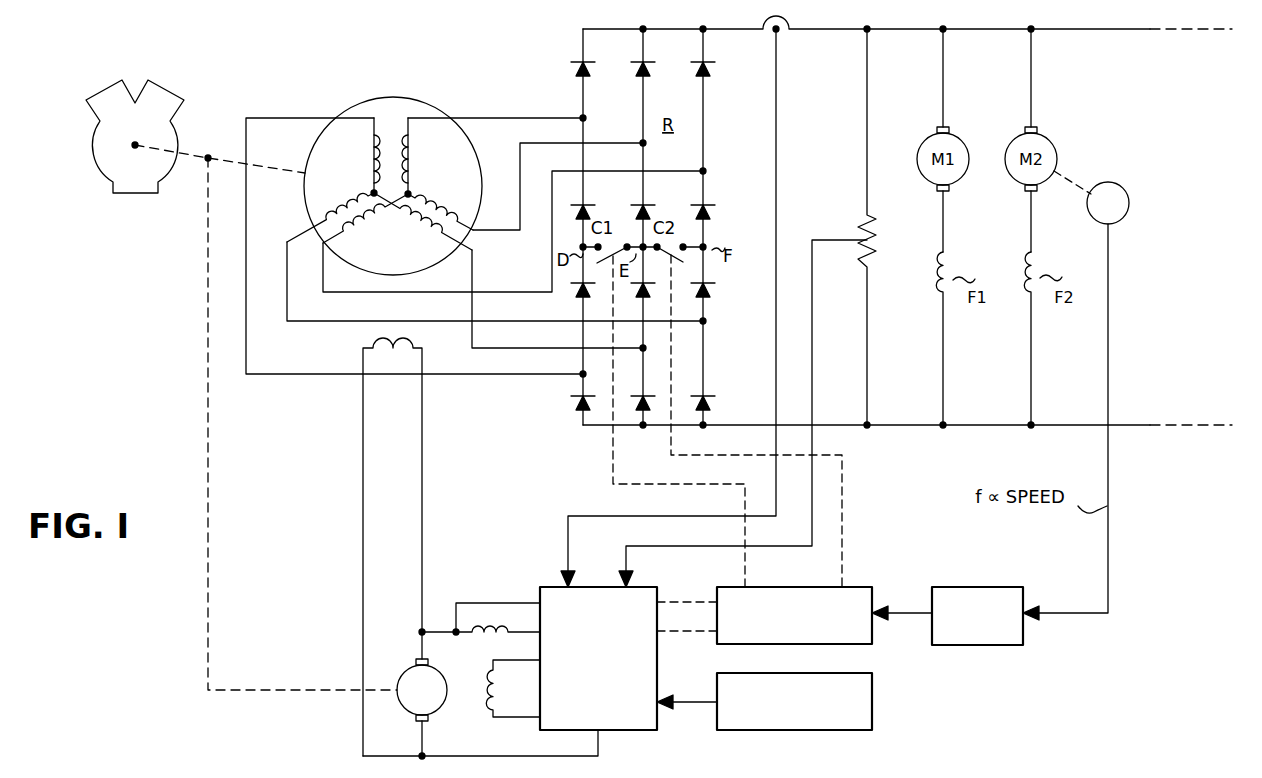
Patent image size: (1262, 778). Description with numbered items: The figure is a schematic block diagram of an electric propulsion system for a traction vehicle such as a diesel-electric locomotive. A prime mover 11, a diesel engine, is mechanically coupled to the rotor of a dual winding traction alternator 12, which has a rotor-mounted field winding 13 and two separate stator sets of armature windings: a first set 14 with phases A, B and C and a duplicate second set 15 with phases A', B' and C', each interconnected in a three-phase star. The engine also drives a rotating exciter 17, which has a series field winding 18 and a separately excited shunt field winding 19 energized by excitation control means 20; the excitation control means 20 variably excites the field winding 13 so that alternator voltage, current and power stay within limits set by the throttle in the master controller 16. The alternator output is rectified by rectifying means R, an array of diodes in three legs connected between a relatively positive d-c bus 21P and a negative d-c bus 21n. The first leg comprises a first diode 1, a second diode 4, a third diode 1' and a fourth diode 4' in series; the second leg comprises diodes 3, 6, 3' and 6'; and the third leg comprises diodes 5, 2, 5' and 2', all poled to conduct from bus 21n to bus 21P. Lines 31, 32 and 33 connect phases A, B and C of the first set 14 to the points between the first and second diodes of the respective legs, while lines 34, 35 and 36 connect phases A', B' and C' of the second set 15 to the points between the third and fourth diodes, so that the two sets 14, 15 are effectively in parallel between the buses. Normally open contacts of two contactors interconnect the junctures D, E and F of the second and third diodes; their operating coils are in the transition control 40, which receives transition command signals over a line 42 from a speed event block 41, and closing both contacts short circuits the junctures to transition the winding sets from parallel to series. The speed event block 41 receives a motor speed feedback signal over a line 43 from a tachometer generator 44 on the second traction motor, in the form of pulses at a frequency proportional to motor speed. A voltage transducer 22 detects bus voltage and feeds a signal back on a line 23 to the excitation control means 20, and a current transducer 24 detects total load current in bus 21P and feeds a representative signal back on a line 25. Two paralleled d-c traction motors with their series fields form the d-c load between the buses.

The prime mover 11 is at (84, 140).
The alternator 12 is at (393, 97).
The field winding 13 is at (367, 336).
The first set of armature windings 14 is at (398, 180).
The second set of armature windings 15 is at (379, 184).
The master controller 16 is at (883, 702).
The exciter 17 is at (405, 666).
The series field winding 18 is at (488, 646).
The shunt field winding 19 is at (488, 708).
The excitation control means 20 is at (532, 586).
The relatively positive d-c power bus 21P is at (912, 30).
The negative d-c power bus 21n is at (926, 426).
The voltage transducer 22 is at (854, 218).
The line 23 is at (812, 352).
The current transducer 24 is at (790, 38).
The line 25 is at (779, 136).
The line 31 is at (526, 118).
The line 32 is at (509, 156).
The line 33 is at (546, 219).
The line 34 is at (518, 374).
The line 35 is at (524, 342).
The line 36 is at (526, 315).
The transition control 40 is at (871, 587).
The speed event means 41 is at (1006, 587).
The line 42 is at (912, 618).
The line 43 is at (1112, 292).
The tachometer generator 44 is at (1123, 182).
The first diode 1 is at (591, 77).
The second diode 2 is at (712, 196).
The first diode 3 is at (651, 77).
The second diode 4 is at (591, 198).
The first diode 5 is at (712, 77).
The second diode 6 is at (654, 196).
The third diode 1' is at (588, 299).
The fourth diode 2' is at (708, 387).
The third diode 3' is at (648, 299).
The fourth diode 4' is at (567, 414).
The third diode 5' is at (712, 296).
The fourth diode 6' is at (634, 390).